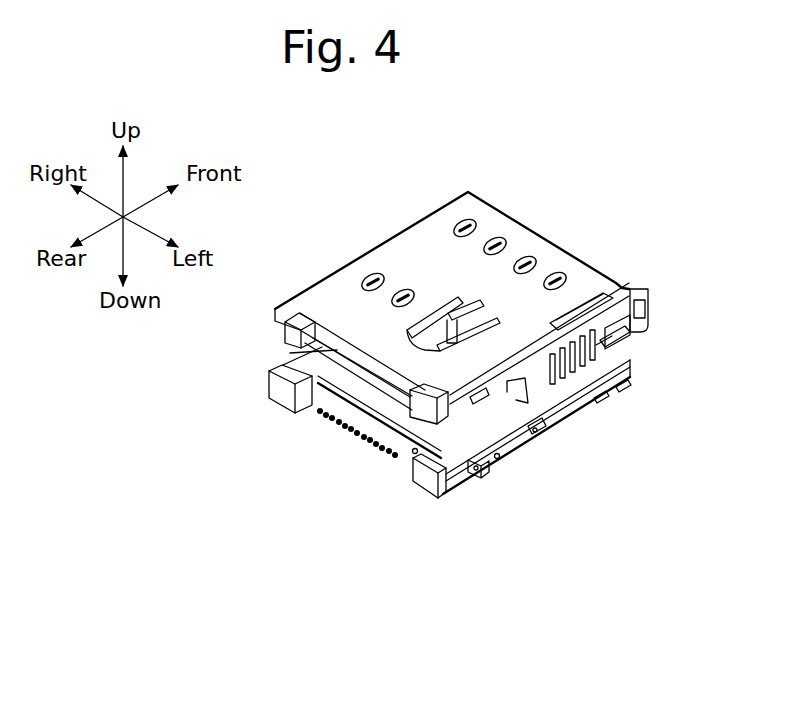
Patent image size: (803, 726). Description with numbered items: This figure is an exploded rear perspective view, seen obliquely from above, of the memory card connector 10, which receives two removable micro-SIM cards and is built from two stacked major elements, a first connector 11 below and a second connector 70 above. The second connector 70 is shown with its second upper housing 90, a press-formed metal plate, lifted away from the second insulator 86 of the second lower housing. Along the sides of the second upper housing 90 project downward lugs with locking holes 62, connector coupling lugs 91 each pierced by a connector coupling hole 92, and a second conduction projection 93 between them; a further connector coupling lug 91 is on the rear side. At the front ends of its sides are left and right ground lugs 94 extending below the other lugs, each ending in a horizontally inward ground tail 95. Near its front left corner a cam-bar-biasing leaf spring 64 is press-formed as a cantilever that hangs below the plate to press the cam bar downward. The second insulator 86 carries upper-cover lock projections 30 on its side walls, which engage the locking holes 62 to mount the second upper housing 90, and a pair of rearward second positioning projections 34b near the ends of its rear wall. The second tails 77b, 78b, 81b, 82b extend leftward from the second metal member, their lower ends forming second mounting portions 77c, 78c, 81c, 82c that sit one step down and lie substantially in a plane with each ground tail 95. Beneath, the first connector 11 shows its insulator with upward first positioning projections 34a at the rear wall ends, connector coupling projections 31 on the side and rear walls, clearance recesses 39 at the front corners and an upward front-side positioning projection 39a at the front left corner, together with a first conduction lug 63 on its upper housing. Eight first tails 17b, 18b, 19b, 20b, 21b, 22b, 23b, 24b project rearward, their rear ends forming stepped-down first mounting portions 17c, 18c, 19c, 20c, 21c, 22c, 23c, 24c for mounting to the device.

The memory card connector 10 is at (170, 338).
The first connector 11 is at (262, 403).
The second connector 70 is at (248, 326).
The second upper housing 90 is at (407, 242).
The connector coupling lug 91 is at (403, 335).
The connector coupling hole 92 is at (372, 372).
The upper-cover lock projection 30 is at (620, 308).
The connector coupling projection 31 is at (414, 470).
The first positioning projection 34a is at (278, 365).
The second positioning projection 34b is at (294, 318).
The locking hole 62 is at (648, 296).
The first conduction lug 63 is at (533, 440).
The cam-bar-biasing leaf spring 64 is at (587, 303).
The second insulator 86 is at (283, 386).
The second conduction projection 93 is at (540, 426).
The ground lug 94 is at (648, 318).
The ground tail 95 is at (630, 335).
The clearance recess 39 is at (600, 336).
The front-side positioning projection 39a is at (620, 348).
The second tail 77b is at (663, 390).
The second mounting portion 77c is at (604, 390).
The second tail 78b is at (658, 406).
The second mounting portion 78c is at (595, 392).
The second tail 82b is at (653, 422).
The second mounting portion 82c is at (587, 397).
The second tail 81b is at (643, 437).
The second mounting portion 81c is at (580, 400).
The first tail 17b is at (293, 573).
The first mounting portion 17c is at (391, 460).
The first tail 18b is at (286, 542).
The first mounting portion 18c is at (376, 450).
The first tail 19b is at (276, 510).
The first mounting portion 19c is at (356, 438).
The first tail 20b is at (264, 477).
The first mounting portion 20c is at (333, 425).
The first tail 21b is at (290, 557).
The first mounting portion 21c is at (384, 455).
The first tail 22b is at (281, 526).
The first mounting portion 22c is at (366, 444).
The first tail 23b is at (270, 494).
The first mounting portion 23c is at (345, 432).
The first tail 24b is at (259, 461).
The first mounting portion 24c is at (322, 418).